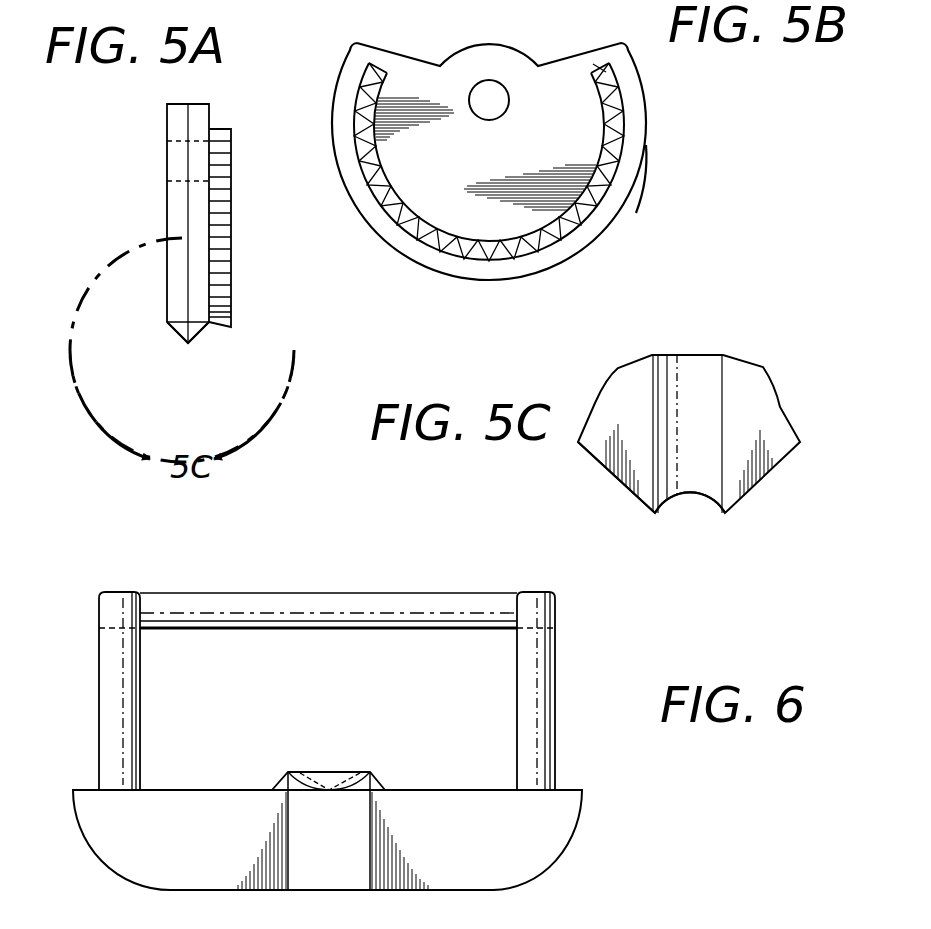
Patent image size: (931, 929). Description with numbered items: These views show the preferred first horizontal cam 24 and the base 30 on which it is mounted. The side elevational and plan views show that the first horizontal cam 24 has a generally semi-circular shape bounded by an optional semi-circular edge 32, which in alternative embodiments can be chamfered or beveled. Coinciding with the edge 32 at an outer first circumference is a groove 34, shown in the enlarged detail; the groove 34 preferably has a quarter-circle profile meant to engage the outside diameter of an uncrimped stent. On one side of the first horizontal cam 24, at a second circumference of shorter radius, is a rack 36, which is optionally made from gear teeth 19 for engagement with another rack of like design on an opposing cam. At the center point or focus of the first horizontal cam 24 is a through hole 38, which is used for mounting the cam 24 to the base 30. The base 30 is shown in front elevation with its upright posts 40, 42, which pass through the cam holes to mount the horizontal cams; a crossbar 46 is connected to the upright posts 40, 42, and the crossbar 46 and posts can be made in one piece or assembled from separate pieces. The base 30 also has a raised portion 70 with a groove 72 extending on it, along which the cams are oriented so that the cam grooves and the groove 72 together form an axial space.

In FIG. 5B, the gear teeth 19 is at (606, 84).
In FIG. 5A, the first horizontal cam 24 is at (166, 233).
In FIG. 5B, the first horizontal cam 24 is at (636, 147).
In FIG. 5C, the first horizontal cam 24 is at (626, 385).
In FIG. 6, the base 30 is at (556, 826).
In FIG. 5A, the semi-circular edge 32 is at (195, 345).
In FIG. 5B, the semi-circular edge 32 is at (639, 193).
In FIG. 5C, the semi-circular edge 32 is at (612, 478).
In FIG. 5A, the groove 34 is at (190, 124).
In FIG. 5B, the groove 34 is at (569, 265).
In FIG. 5C, the groove 34 is at (686, 506).
In FIG. 5A, the rack 36 is at (222, 327).
In FIG. 5B, the rack 36 is at (623, 104).
In FIG. 5A, the through hole 38 is at (176, 162).
In FIG. 5B, the through hole 38 is at (503, 114).
In FIG. 6, the upright post 40 is at (140, 706).
In FIG. 6, the upright post 42 is at (557, 676).
In FIG. 6, the crossbar 46 is at (376, 610).
In FIG. 6, the raised portion 70 is at (378, 778).
In FIG. 6, the groove 72 is at (328, 773).